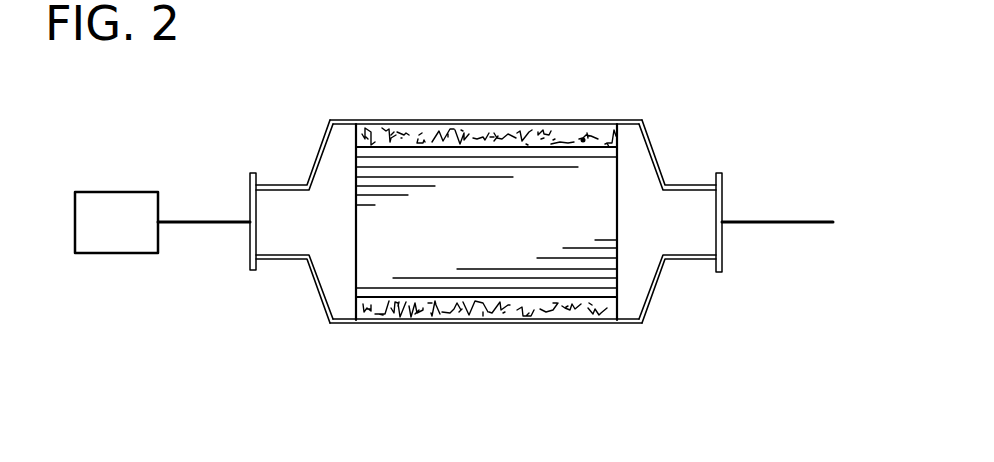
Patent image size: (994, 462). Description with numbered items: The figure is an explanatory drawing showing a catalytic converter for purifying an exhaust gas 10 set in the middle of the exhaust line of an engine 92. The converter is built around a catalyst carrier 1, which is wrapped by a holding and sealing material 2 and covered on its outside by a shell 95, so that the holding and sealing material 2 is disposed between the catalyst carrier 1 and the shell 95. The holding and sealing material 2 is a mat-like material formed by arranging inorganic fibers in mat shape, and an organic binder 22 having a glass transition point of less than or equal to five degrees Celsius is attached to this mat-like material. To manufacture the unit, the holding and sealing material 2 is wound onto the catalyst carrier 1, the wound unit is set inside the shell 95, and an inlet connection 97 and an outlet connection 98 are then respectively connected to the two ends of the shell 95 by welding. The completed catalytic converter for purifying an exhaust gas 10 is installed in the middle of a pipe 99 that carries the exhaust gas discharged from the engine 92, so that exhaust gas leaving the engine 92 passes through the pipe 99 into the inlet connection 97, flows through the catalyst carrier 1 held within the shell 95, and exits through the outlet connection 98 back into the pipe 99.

The catalyst carrier 1 is at (503, 217).
The holding and sealing material 2 is at (462, 114).
The organic binder 22 is at (583, 140).
The catalytic converter for purifying an exhaust gas 10 is at (486, 227).
The engine 92 is at (122, 253).
The shell 95 is at (460, 325).
The inlet connection 97 is at (280, 262).
The outlet connection 98 is at (690, 262).
The pipe 99 is at (193, 225).